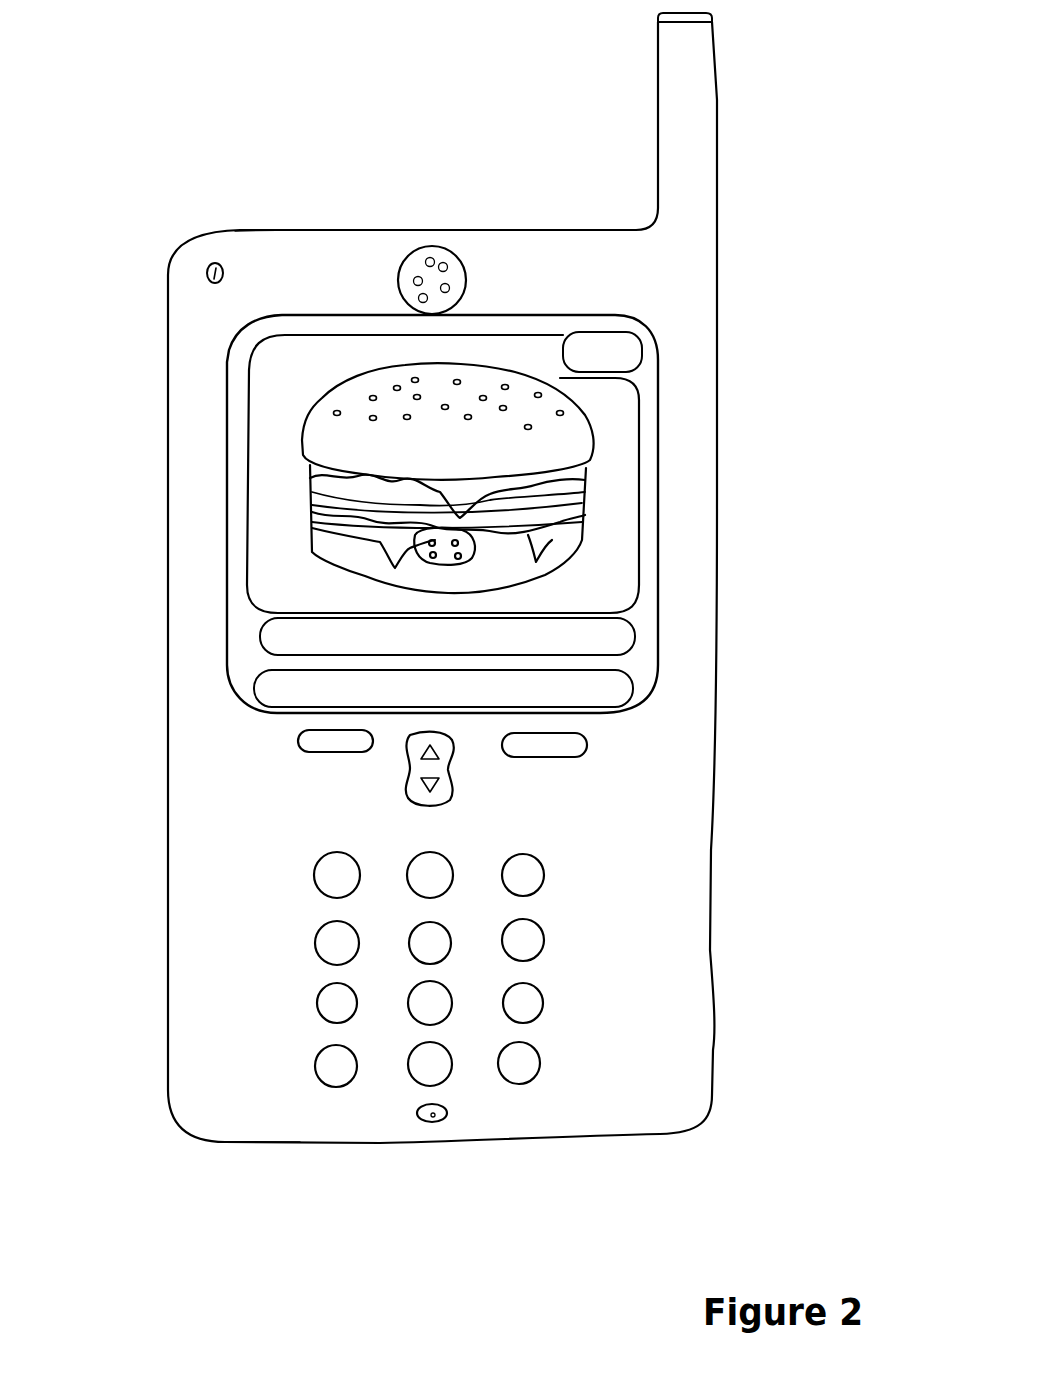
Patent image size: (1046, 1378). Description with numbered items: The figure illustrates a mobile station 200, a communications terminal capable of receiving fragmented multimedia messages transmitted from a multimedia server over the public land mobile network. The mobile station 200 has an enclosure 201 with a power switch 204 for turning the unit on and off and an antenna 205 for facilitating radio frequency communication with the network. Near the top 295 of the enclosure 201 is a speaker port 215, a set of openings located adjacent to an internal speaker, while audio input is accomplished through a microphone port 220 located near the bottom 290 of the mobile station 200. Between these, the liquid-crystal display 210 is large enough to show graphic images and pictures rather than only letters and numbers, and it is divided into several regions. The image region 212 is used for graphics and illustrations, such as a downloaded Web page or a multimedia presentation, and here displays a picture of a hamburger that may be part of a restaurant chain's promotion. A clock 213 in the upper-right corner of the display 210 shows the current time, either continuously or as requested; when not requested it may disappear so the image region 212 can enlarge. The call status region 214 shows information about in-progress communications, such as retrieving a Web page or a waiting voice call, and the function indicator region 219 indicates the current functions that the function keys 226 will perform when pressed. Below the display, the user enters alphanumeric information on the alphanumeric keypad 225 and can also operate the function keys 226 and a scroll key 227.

The mobile station 200 is at (278, 133).
The enclosure 201 is at (168, 563).
The power switch 204 is at (208, 287).
The antenna 205 is at (717, 136).
The liquid-crystal display 210 is at (648, 393).
The image region 212 is at (628, 572).
The clock 213 is at (642, 354).
The call status region 214 is at (630, 637).
The speaker port 215 is at (398, 258).
The function indicator region 219 is at (643, 692).
The microphone port 220 is at (448, 1112).
The alphanumeric keypad 225 is at (535, 970).
The function keys 226 is at (303, 752).
The scroll key 227 is at (405, 792).
The bottom 290 is at (268, 1147).
The top 295 is at (235, 228).